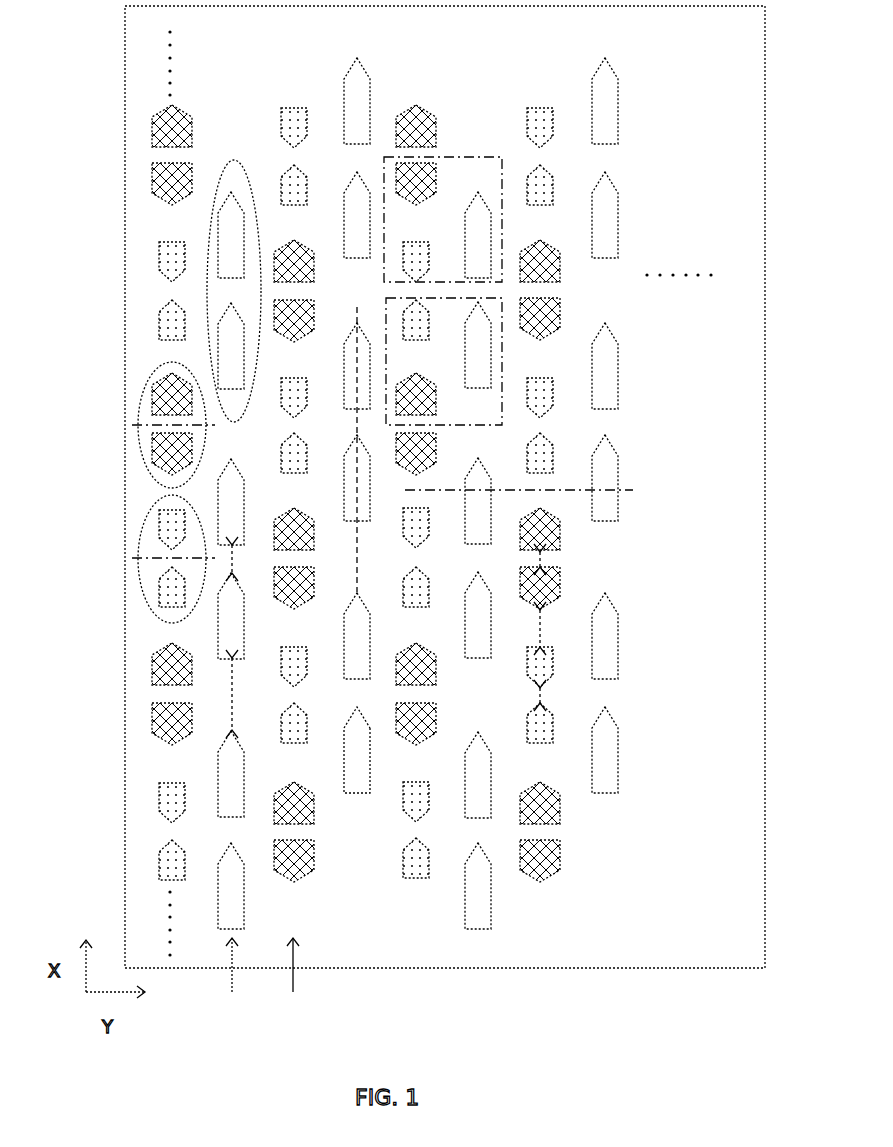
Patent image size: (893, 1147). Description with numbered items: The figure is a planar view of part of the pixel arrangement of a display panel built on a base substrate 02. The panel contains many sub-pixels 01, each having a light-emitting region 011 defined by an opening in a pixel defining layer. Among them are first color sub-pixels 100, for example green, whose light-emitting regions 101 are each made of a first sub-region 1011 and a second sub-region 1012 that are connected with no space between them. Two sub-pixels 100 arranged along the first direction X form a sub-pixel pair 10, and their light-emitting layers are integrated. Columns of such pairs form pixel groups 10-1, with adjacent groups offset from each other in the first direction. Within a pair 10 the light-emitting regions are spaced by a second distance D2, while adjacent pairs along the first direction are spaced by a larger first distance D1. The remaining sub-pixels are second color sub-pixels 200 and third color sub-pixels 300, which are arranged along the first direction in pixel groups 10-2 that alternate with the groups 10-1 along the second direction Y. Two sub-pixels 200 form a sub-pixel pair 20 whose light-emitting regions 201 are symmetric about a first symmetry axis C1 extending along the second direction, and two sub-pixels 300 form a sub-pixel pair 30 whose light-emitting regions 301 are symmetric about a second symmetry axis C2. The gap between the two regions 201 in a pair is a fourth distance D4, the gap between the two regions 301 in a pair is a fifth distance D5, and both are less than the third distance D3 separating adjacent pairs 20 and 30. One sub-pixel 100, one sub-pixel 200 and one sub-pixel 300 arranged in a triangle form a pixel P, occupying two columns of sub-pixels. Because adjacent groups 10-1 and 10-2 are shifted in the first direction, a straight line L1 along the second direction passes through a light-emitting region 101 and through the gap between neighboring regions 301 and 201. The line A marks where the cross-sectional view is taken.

The base substrate 02 is at (152, 33).
The sub-pixel pair 10 is at (240, 160).
The light-emitting region 011 is at (352, 93).
The sub-pixel 01 is at (417, 113).
The light-emitting region of sub-pixel 200 201 is at (110, 124).
The second color sub-pixel 200 is at (155, 120).
The light-emitting region of sub-pixel 100 101 is at (140, 235).
The first color sub-pixel 100 is at (232, 243).
The light-emitting region of sub-pixel 300 301 is at (110, 262).
The third color sub-pixel 300 is at (165, 267).
The sub-pixel pair 20 is at (145, 410).
The sub-pixel pair 30 is at (145, 530).
The first symmetry axis C1 is at (135, 425).
The second symmetry axis C2 is at (135, 558).
The pixel P is at (487, 157).
The line AA' A is at (347, 448).
The straight line L1 is at (633, 490).
The first distance D1 is at (245, 694).
The second distance D2 is at (245, 559).
The third distance D3 is at (556, 628).
The fourth distance D4 is at (556, 559).
The fifth distance D5 is at (556, 695).
The first sub-region 1011 is at (357, 738).
The second sub-region 1012 is at (355, 772).
The pixel group 10-1 is at (235, 978).
The pixel group 10-2 is at (293, 978).